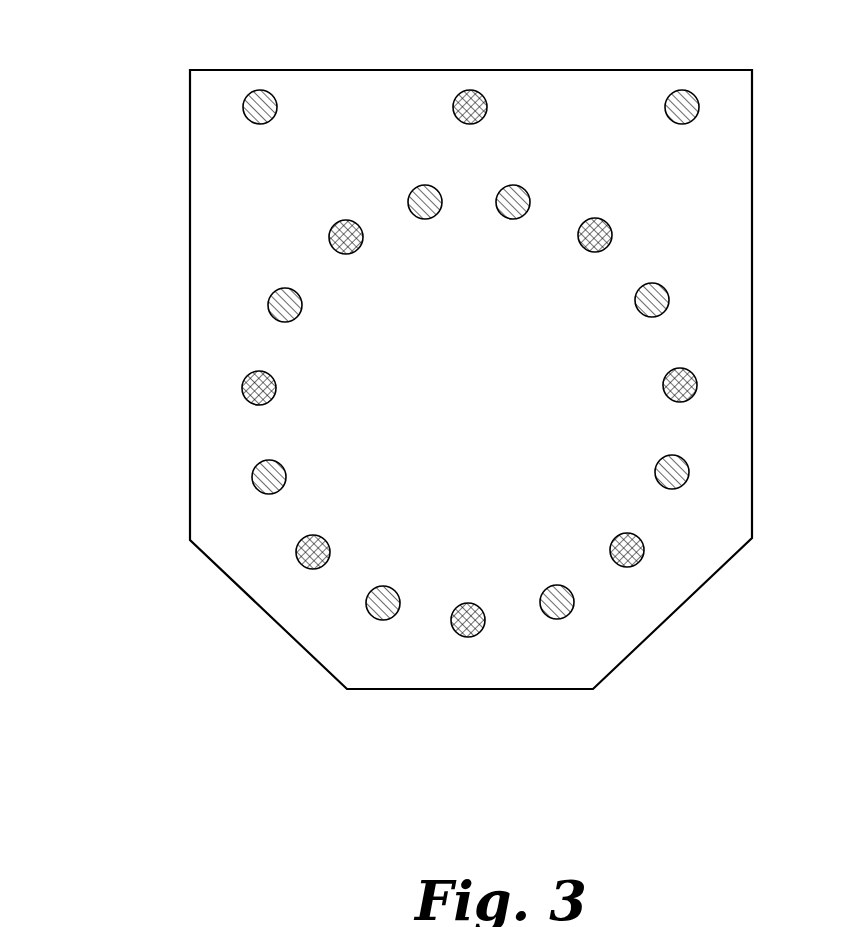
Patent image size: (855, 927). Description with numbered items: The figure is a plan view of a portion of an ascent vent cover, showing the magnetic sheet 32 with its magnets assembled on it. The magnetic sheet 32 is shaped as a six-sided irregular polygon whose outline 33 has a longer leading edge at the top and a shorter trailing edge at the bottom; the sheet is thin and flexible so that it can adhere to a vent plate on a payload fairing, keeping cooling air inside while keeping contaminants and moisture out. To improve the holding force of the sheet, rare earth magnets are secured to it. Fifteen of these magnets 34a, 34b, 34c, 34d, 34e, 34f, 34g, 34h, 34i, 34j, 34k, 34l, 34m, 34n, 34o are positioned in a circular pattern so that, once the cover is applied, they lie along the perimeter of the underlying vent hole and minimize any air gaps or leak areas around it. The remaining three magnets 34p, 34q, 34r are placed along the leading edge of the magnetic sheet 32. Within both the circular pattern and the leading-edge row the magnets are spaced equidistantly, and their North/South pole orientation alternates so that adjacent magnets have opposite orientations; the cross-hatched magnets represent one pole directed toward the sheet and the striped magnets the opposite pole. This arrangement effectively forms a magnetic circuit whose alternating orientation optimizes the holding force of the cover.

The magnetic sheet 32 is at (113, 424).
The plate outline 33 is at (200, 232).
The magnet 34a is at (253, 474).
The magnet 34b is at (297, 557).
The magnet 34c is at (371, 611).
The magnet 34d is at (460, 636).
The magnet 34e is at (570, 611).
The magnet 34f is at (644, 553).
The magnet 34g is at (688, 472).
The magnet 34h is at (697, 385).
The magnet 34i is at (668, 300).
The magnet 34j is at (612, 235).
The magnet 34k is at (520, 188).
The magnet 34l is at (420, 186).
The magnet 34m is at (330, 228).
The magnet 34n is at (270, 300).
The magnet 34o is at (243, 385).
The magnet 34p is at (692, 91).
The magnet 34q is at (476, 91).
The magnet 34r is at (255, 91).